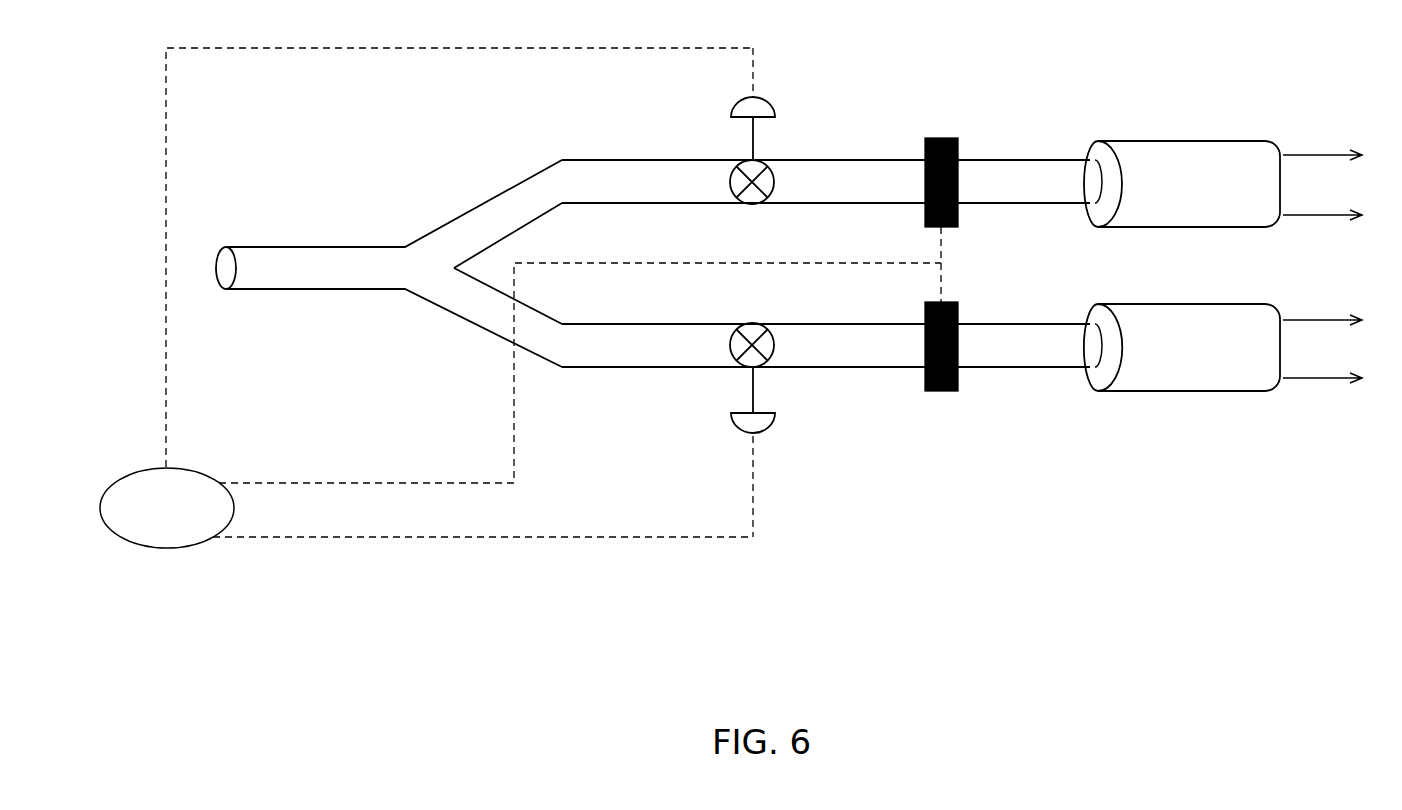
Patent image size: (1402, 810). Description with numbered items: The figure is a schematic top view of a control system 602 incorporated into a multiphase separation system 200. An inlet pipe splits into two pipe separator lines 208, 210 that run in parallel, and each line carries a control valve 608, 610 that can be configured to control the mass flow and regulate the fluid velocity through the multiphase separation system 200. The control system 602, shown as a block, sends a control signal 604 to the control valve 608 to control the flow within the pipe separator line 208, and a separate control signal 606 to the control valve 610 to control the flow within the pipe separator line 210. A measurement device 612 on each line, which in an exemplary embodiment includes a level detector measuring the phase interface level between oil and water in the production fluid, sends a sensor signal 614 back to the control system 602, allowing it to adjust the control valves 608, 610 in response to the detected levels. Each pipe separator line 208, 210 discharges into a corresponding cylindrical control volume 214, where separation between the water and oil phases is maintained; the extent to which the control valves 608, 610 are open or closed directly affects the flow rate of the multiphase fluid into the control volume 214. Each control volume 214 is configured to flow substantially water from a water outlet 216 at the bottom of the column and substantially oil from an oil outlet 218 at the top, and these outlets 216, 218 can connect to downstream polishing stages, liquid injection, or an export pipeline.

The multiphase separation system 200 is at (793, 710).
The pipe separator line 208 is at (615, 172).
The pipe separator line 210 is at (614, 350).
The control volume 214 is at (1148, 141).
The water outlet 216 is at (1325, 215).
The oil outlet 218 is at (1305, 153).
The control system 602 is at (166, 550).
The control signal 604 is at (168, 365).
The control signal 606 is at (475, 537).
The control valve 608 is at (768, 100).
The control valve 610 is at (767, 423).
The measurement device 612 is at (942, 137).
The sensor signal 614 is at (513, 415).